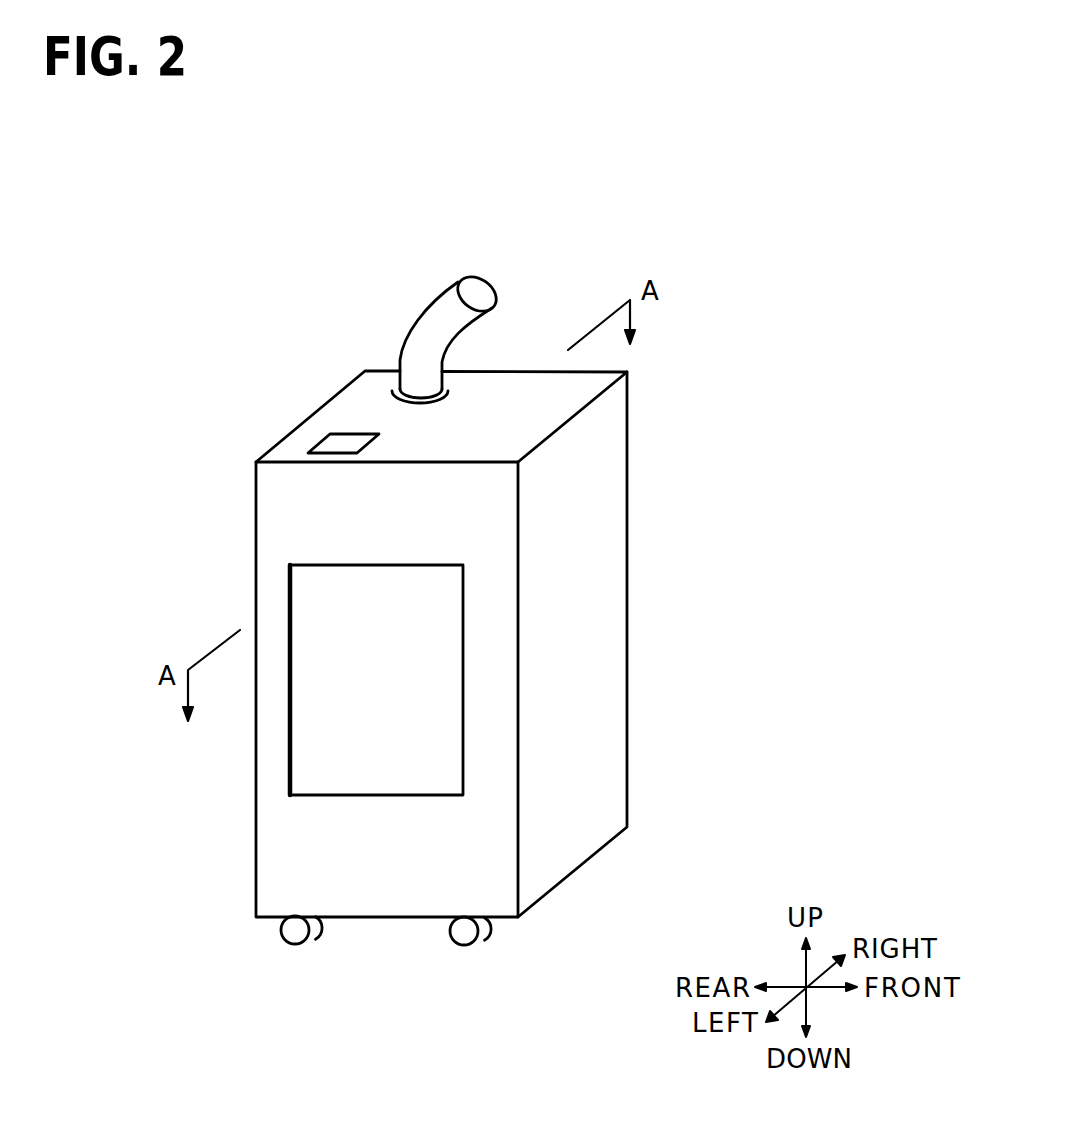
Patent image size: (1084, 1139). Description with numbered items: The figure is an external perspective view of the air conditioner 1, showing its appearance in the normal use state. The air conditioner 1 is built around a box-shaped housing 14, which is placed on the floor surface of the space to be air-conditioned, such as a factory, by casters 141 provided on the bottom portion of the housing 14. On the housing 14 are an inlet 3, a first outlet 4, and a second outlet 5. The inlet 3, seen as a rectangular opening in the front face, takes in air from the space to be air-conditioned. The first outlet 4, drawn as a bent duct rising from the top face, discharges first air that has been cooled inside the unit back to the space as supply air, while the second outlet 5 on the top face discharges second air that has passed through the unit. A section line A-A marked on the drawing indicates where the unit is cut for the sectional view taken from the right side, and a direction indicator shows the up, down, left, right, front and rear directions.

The air conditioner 1 is at (115, 314).
The inlet 3 is at (289, 724).
The first outlet 4 is at (487, 280).
The second outlet 5 is at (320, 442).
The housing 14 is at (600, 630).
The casters 141 is at (293, 935).